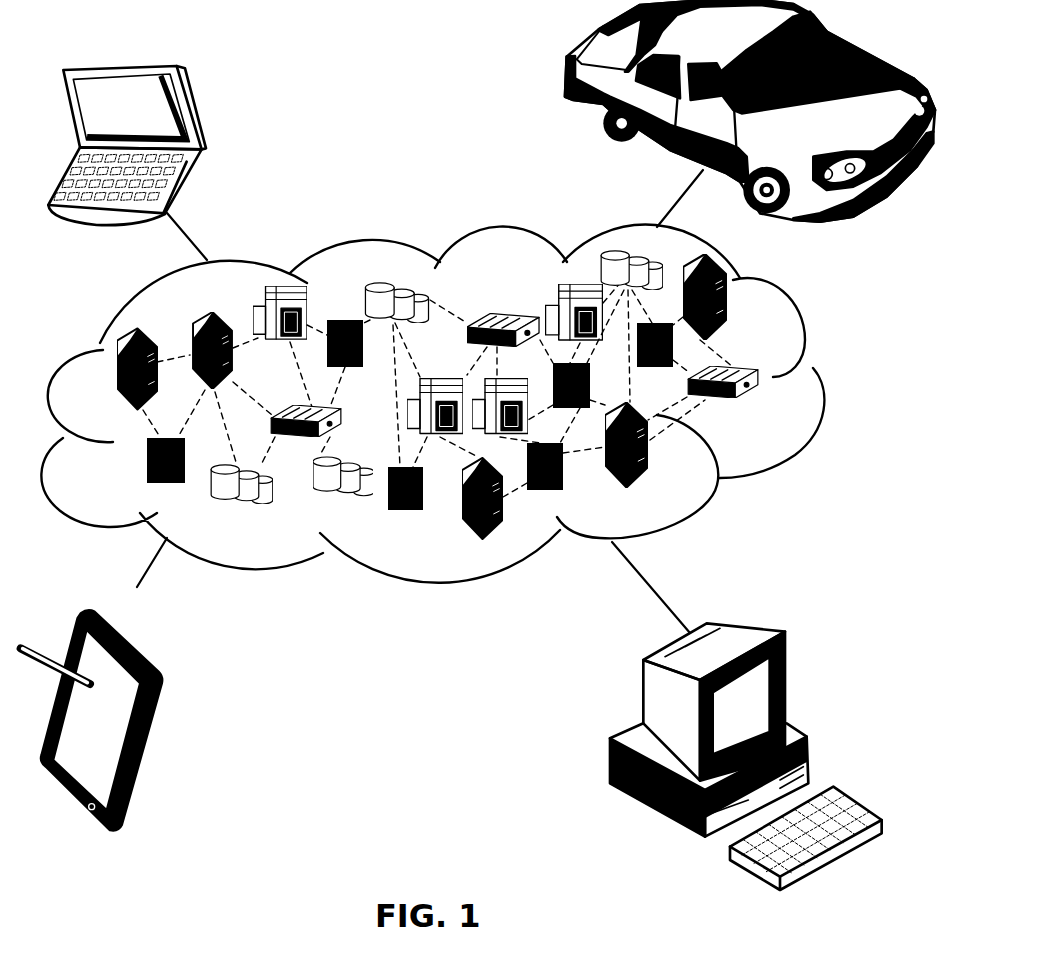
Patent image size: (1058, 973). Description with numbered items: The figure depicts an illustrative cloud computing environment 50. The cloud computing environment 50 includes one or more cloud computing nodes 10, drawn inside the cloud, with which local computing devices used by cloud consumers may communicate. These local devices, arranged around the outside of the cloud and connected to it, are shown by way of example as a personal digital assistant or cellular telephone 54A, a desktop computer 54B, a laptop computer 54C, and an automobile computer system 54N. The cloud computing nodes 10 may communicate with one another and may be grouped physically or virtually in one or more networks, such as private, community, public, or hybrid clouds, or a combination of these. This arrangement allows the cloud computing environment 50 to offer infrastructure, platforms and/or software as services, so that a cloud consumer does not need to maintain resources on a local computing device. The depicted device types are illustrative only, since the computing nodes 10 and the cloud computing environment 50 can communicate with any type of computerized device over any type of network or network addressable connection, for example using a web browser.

The cloud computing node 10 is at (787, 413).
The cloud computing environment 50 is at (466, 404).
The personal digital assistant or cellular telephone 54A is at (158, 712).
The desktop computer 54B is at (753, 623).
The laptop computer 54C is at (192, 112).
The automobile computer system 54N is at (567, 78).